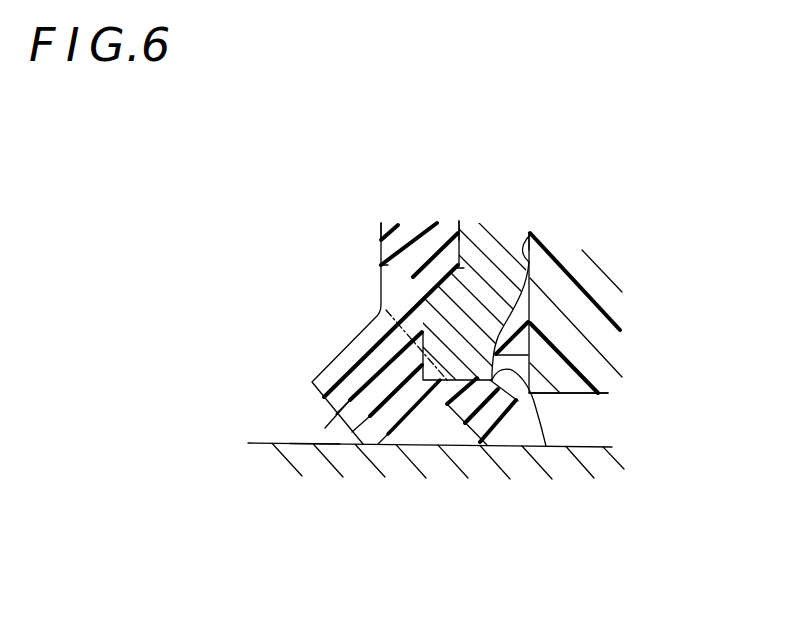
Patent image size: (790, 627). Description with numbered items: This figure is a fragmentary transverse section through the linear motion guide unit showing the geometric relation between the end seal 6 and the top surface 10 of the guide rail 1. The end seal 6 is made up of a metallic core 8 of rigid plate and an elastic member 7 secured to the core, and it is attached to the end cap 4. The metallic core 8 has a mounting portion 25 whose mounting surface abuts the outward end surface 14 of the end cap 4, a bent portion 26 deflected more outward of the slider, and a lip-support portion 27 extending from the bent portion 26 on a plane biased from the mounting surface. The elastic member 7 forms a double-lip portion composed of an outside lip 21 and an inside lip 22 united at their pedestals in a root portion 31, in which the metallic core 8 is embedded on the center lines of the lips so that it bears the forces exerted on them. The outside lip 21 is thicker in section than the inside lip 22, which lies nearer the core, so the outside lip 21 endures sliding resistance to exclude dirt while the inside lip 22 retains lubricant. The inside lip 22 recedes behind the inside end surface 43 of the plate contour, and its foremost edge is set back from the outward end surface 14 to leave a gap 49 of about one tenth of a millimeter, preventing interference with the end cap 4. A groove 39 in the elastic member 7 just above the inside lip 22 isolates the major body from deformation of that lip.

The guide rail 1 is at (362, 472).
The end cap 4 is at (577, 302).
The end seal 6 is at (518, 147).
The elastic member 7 is at (419, 222).
The metallic core 8 is at (491, 262).
The top surface 10 is at (290, 443).
The outward end surface 14 is at (531, 234).
The outside lip 21 is at (352, 412).
The inside lip 22 is at (492, 432).
The mounting portion 25 is at (519, 242).
The bent portion 26 is at (490, 308).
The lip-support portion 27 is at (445, 370).
The root portion 31 is at (396, 352).
The groove 39 is at (542, 420).
The inside end surface 43 is at (531, 249).
The gap 49 is at (531, 396).